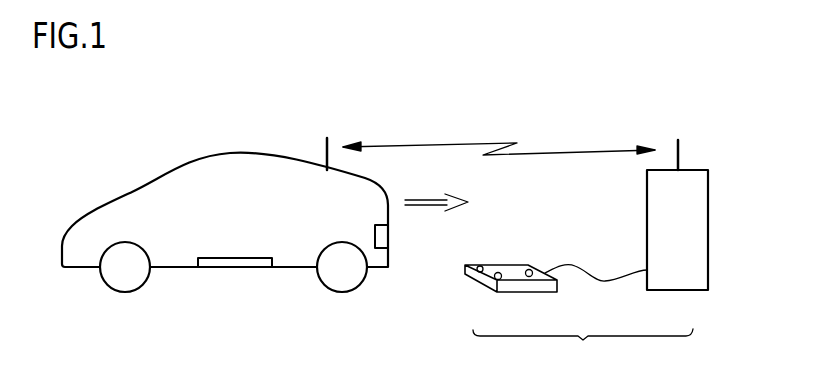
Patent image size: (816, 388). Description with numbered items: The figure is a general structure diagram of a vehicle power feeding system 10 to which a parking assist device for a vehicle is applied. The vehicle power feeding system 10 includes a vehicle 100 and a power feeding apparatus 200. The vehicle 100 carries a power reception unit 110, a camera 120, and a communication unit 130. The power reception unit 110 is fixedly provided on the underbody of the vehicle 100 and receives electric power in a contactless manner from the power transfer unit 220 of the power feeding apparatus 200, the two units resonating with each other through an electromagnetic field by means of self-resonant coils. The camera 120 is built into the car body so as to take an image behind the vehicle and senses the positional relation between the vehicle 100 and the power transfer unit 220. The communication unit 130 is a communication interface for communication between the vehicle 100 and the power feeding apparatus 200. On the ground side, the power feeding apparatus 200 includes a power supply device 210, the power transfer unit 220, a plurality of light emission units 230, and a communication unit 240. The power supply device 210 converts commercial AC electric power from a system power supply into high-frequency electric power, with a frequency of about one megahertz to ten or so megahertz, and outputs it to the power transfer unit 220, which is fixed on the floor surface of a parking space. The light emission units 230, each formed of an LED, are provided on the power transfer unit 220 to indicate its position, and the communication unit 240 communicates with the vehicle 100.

The vehicle power feeding system 10 is at (143, 88).
The vehicle 100 is at (230, 153).
The power reception unit 110 is at (235, 263).
The camera 120 is at (383, 268).
The communication unit 130 is at (326, 148).
The power feeding apparatus 200 is at (583, 349).
The power supply device 210 is at (711, 230).
The power transfer unit 220 is at (537, 288).
The light emission units 230 is at (497, 272).
The communication unit 240 is at (682, 150).